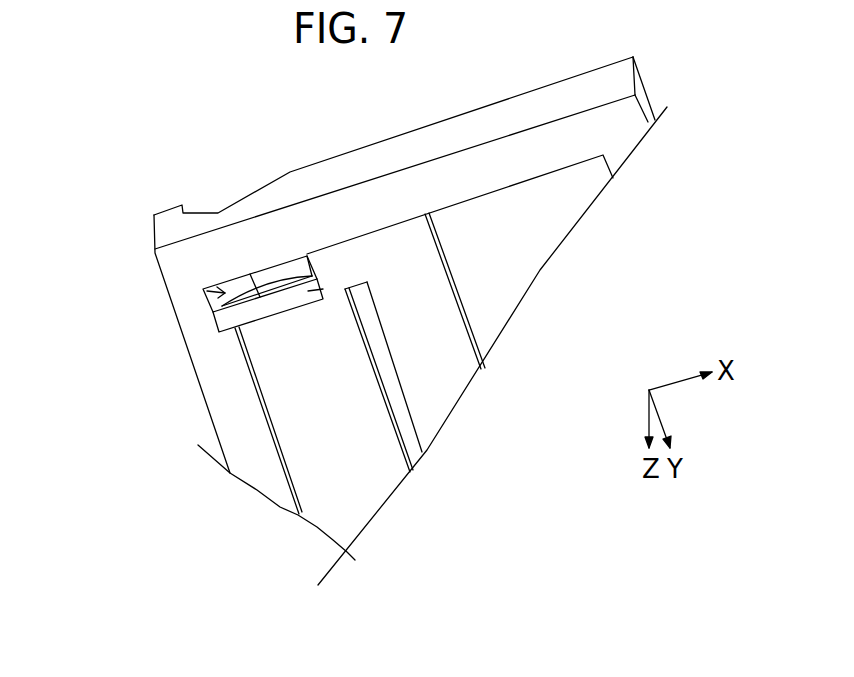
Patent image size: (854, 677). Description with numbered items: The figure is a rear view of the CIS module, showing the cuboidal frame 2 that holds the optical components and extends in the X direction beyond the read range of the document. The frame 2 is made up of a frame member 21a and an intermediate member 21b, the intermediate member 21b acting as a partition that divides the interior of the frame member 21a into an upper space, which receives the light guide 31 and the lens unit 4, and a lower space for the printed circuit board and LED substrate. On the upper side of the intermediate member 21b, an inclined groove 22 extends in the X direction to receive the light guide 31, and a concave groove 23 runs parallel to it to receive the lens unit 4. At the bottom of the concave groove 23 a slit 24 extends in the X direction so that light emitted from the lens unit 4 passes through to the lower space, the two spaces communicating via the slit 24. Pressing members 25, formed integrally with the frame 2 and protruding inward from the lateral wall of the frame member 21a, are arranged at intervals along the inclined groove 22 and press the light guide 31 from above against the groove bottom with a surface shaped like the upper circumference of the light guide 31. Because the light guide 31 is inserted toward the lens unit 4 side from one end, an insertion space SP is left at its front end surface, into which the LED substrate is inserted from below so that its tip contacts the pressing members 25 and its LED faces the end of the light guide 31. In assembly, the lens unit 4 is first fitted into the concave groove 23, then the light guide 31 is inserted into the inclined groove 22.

The frame 2 is at (620, 137).
The frame member 21a is at (517, 113).
The intermediate member 21b is at (290, 297).
The inclined groove 22 is at (222, 322).
The concave groove 23 is at (323, 288).
The slit 24 is at (383, 334).
The pressing members 25 is at (282, 282).
The light guide 31 is at (293, 270).
The lens unit 4 is at (322, 276).
The insertion space SP is at (207, 291).